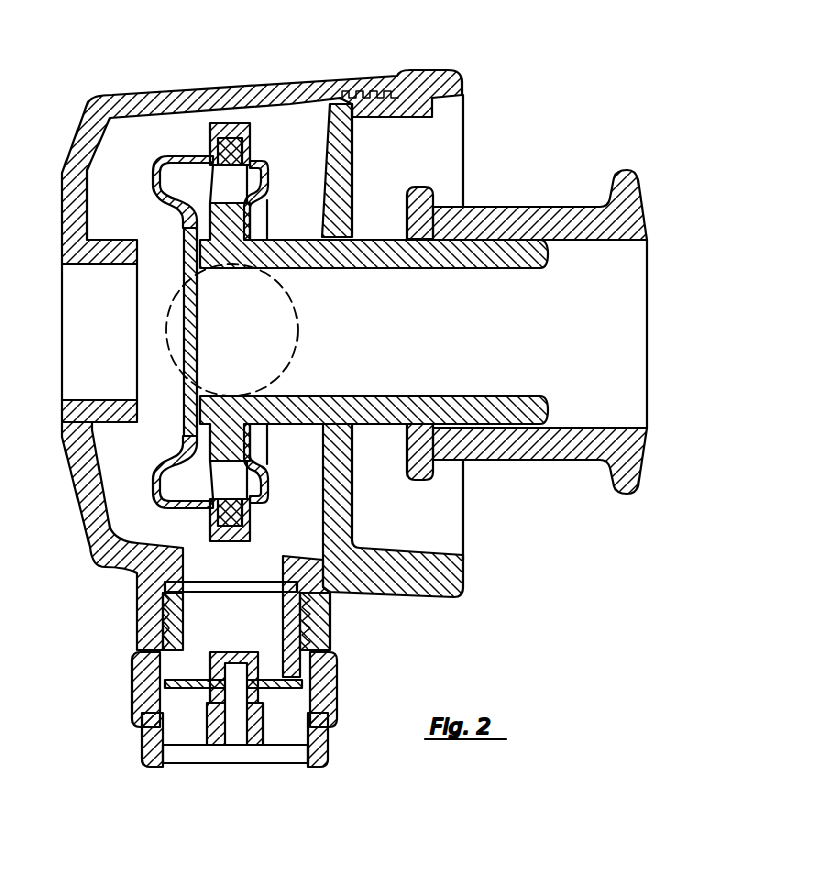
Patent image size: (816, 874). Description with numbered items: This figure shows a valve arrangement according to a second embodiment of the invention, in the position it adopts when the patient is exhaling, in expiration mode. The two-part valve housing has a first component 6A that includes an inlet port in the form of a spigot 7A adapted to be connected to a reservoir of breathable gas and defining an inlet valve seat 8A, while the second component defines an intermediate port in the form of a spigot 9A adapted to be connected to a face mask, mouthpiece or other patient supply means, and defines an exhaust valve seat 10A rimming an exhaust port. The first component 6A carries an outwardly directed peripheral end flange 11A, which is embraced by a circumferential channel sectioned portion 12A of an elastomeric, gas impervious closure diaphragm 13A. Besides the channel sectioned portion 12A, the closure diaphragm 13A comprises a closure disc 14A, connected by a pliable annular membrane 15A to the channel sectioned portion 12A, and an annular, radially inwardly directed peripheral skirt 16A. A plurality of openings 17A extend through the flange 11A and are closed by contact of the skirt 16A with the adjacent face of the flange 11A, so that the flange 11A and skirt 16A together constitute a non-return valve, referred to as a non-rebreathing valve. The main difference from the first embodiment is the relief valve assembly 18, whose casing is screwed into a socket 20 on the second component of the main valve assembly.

The first component 6A is at (470, 126).
The spigot 7A is at (465, 290).
The inlet valve seat 8A is at (203, 280).
The spigot 9A is at (302, 326).
The exhaust valve seat 10A is at (150, 404).
The peripheral end flange 11A is at (212, 517).
The channel sectioned portion 12A is at (238, 140).
The closure diaphragm 13A is at (123, 492).
The closure disc 14A is at (183, 317).
The annular membrane 15A is at (156, 493).
The peripheral skirt 16A is at (267, 165).
The openings 17A is at (223, 193).
The relief valve assembly 18 is at (348, 687).
The socket 20 is at (325, 628).